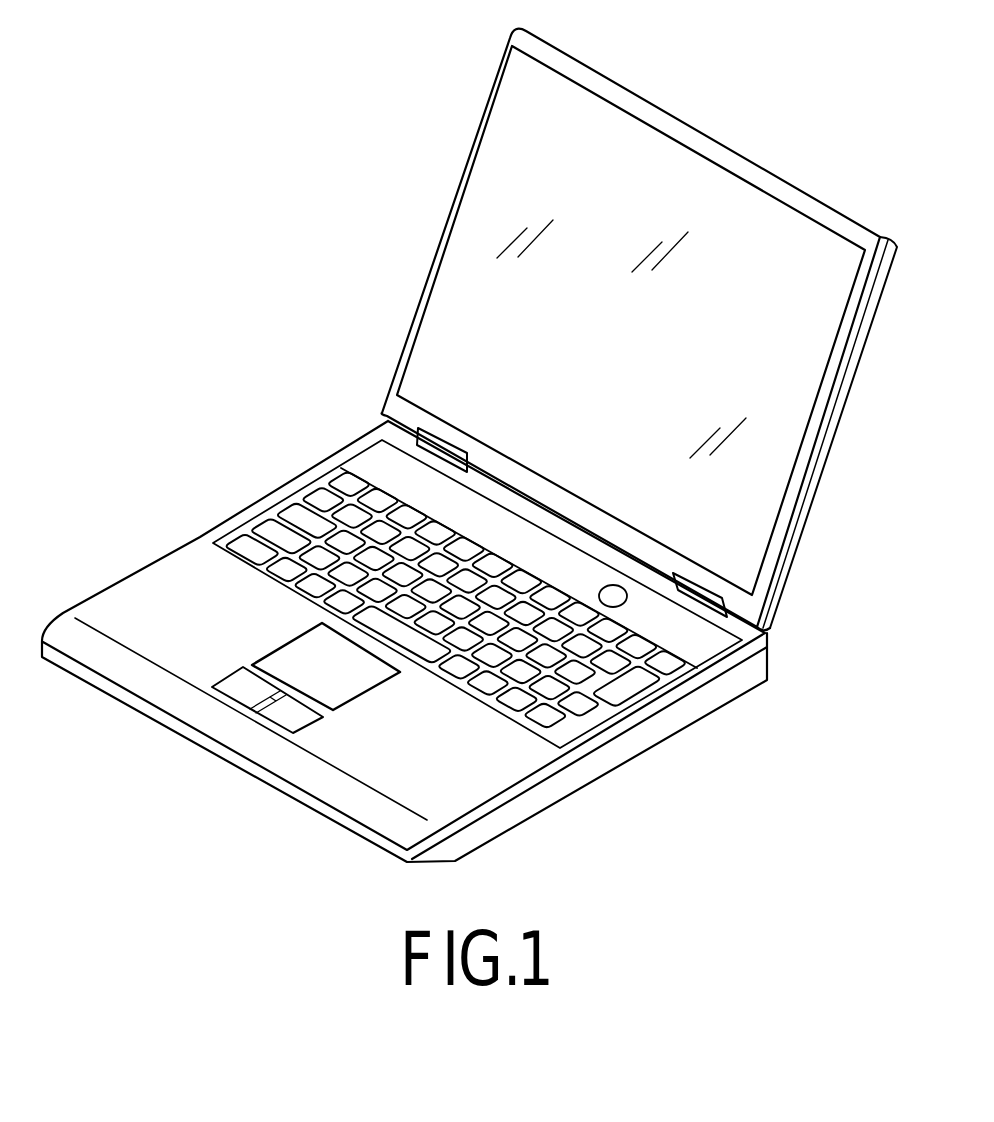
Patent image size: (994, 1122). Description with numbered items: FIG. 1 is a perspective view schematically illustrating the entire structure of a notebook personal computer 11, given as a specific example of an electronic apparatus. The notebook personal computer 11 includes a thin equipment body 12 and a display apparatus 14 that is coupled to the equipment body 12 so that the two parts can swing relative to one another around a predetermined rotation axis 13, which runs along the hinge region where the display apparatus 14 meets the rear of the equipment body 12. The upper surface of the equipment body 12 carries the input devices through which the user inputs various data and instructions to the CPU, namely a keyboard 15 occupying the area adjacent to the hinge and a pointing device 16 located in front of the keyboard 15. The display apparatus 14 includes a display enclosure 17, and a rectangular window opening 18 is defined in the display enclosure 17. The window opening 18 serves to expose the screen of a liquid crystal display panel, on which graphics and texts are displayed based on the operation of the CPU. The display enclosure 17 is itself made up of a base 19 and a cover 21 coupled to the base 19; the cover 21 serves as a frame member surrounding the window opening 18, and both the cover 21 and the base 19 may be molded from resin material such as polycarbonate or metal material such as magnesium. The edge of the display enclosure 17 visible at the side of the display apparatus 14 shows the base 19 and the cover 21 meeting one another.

The notebook personal computer 11 is at (324, 381).
The equipment body 12 is at (232, 538).
The rotation axis 13 is at (768, 628).
The display apparatus 14 is at (430, 208).
The keyboard 15 is at (309, 487).
The pointing device 16 is at (370, 692).
The display enclosure 17 is at (476, 128).
The window opening 18 is at (422, 310).
The base 19 is at (814, 497).
The cover 21 is at (790, 547).